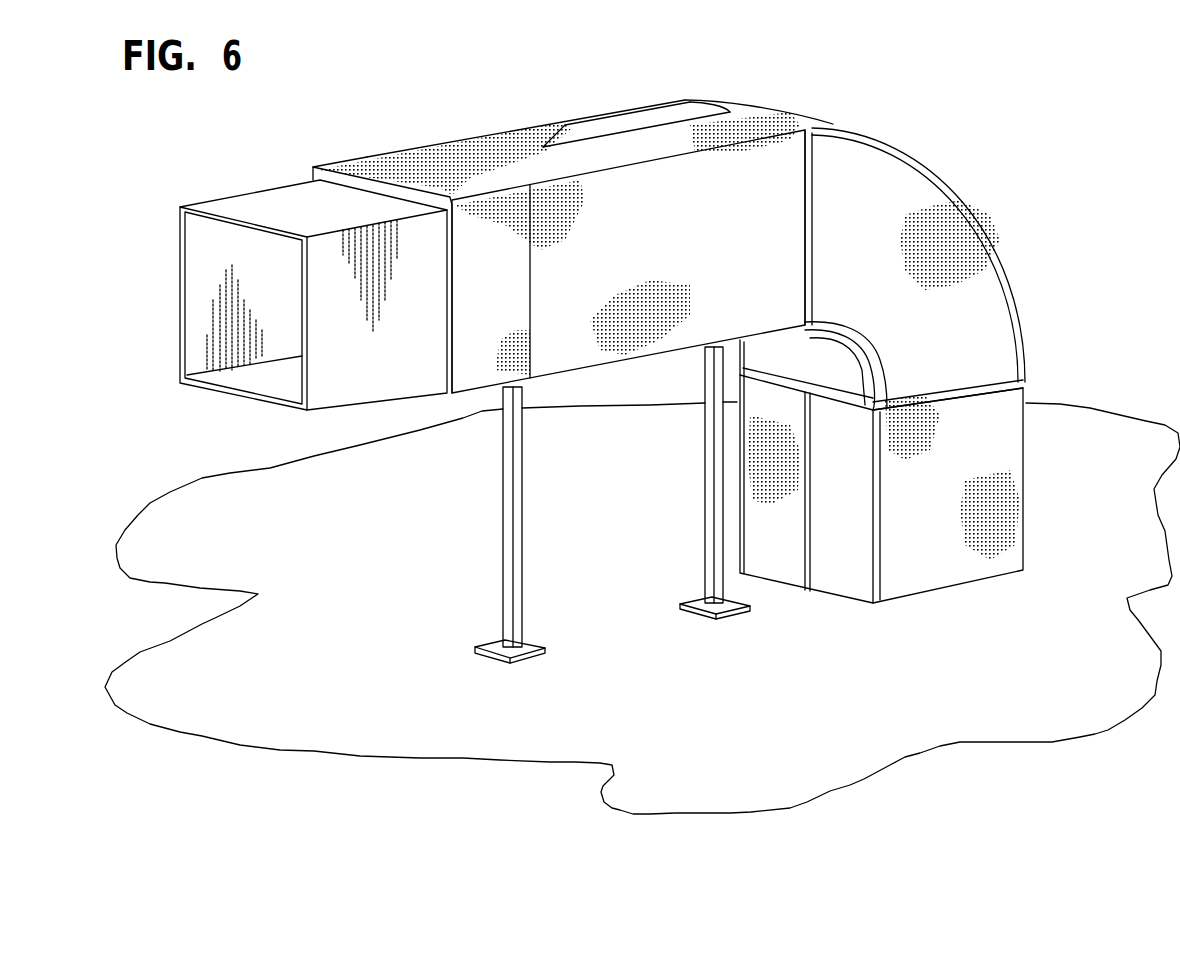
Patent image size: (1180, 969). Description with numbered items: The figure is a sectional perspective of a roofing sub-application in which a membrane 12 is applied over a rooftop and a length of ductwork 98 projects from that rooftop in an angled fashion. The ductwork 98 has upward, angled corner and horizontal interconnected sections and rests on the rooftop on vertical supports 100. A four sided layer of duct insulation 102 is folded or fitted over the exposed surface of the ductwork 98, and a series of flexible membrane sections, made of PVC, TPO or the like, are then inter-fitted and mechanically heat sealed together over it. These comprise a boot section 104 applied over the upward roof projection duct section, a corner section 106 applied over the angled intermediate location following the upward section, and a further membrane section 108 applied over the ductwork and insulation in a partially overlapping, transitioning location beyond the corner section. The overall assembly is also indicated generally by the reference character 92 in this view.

The membrane 12 is at (363, 583).
The ductwork assembly 92 is at (512, 96).
The ductwork 98 is at (212, 279).
The vertical supports 100 is at (710, 482).
The duct insulation 102 is at (365, 155).
The boot section 104 is at (920, 568).
The corner section 106 is at (967, 223).
The membrane section 108 is at (627, 122).